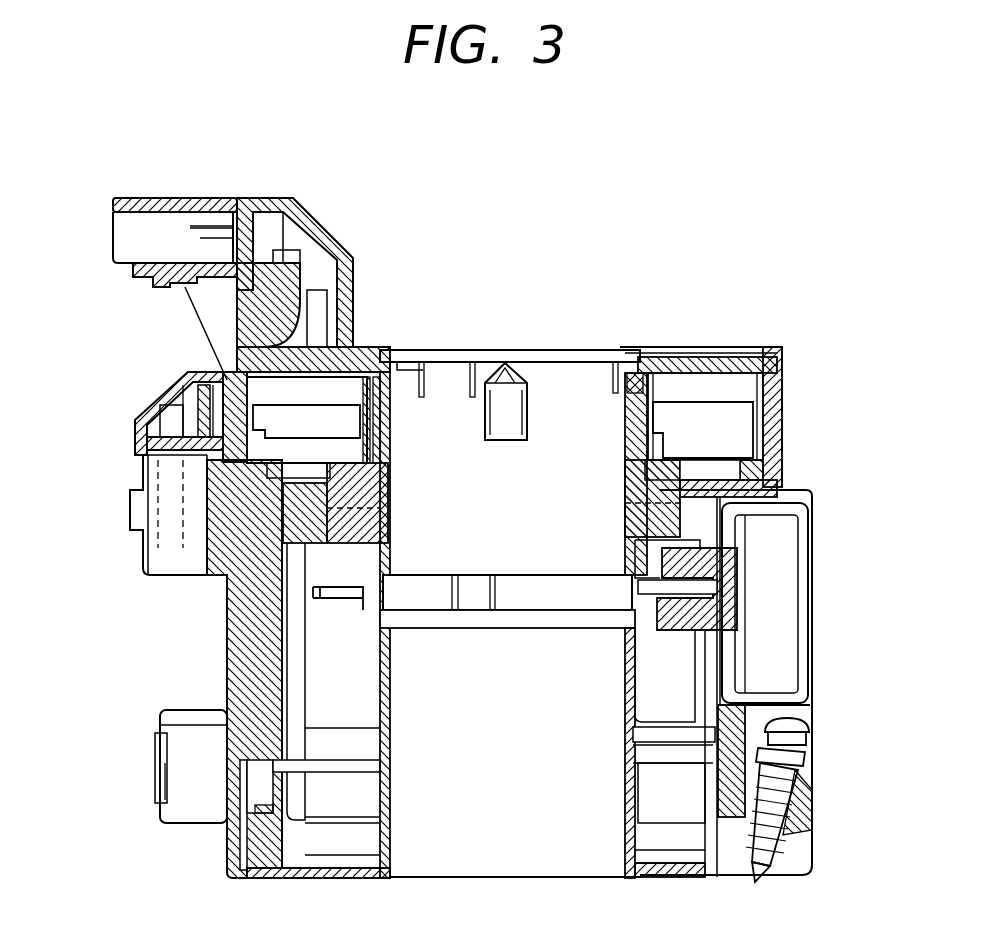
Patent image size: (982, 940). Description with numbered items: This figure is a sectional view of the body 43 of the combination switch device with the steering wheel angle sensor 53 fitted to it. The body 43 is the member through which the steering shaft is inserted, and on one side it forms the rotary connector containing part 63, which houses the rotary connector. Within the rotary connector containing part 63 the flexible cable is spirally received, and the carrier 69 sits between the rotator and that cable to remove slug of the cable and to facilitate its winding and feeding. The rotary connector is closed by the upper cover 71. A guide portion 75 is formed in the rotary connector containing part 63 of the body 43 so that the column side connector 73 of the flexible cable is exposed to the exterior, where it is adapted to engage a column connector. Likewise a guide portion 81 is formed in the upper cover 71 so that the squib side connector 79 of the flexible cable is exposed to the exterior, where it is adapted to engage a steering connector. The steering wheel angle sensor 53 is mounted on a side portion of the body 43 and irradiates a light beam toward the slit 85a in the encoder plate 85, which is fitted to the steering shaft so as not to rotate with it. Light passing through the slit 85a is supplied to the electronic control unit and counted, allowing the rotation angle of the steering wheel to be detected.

The body 43 is at (212, 667).
The steering wheel angle sensor 53 is at (785, 594).
The rotary connector containing part 63 is at (792, 418).
The carrier 69 is at (728, 405).
The upper cover 71 is at (688, 358).
The column side connector 73 is at (168, 582).
The guide portion 75 is at (170, 384).
The squib side connector 79 is at (115, 237).
The guide portion 81 is at (197, 196).
The encoder plate 85 is at (523, 605).
The slit 85a is at (330, 600).